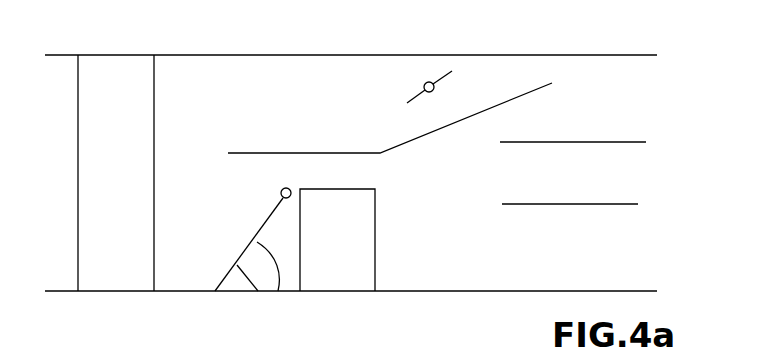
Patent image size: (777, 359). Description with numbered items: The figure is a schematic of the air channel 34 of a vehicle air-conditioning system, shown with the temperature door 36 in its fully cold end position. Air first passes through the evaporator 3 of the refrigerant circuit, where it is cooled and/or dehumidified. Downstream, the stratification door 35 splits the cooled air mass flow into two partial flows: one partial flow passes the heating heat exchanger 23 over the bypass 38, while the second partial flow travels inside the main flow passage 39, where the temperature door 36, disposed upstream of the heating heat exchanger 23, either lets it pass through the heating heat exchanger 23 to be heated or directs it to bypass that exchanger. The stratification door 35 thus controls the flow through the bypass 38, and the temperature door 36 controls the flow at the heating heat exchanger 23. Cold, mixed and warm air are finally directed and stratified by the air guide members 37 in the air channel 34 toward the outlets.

The evaporator 3 is at (120, 83).
The heating heat exchanger 23 is at (333, 255).
The air channel 34 is at (665, 83).
The stratification door 35 is at (426, 82).
The temperature door 36 is at (278, 291).
The air guide members 37 is at (627, 142).
The bypass 38 is at (323, 85).
The main flow passage 39 is at (462, 252).